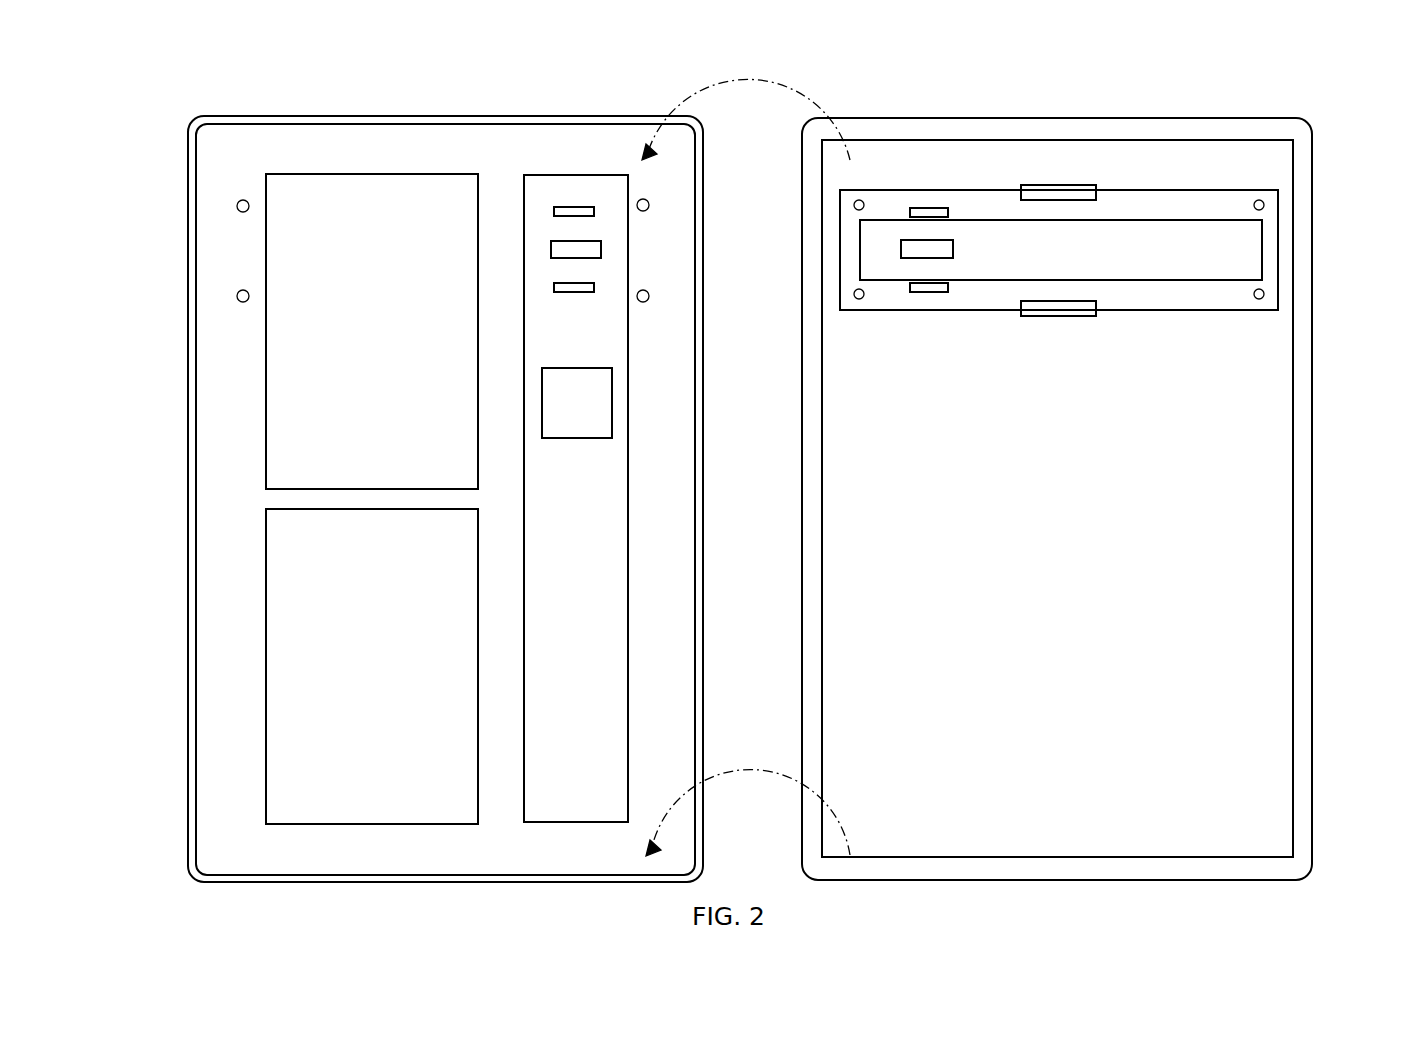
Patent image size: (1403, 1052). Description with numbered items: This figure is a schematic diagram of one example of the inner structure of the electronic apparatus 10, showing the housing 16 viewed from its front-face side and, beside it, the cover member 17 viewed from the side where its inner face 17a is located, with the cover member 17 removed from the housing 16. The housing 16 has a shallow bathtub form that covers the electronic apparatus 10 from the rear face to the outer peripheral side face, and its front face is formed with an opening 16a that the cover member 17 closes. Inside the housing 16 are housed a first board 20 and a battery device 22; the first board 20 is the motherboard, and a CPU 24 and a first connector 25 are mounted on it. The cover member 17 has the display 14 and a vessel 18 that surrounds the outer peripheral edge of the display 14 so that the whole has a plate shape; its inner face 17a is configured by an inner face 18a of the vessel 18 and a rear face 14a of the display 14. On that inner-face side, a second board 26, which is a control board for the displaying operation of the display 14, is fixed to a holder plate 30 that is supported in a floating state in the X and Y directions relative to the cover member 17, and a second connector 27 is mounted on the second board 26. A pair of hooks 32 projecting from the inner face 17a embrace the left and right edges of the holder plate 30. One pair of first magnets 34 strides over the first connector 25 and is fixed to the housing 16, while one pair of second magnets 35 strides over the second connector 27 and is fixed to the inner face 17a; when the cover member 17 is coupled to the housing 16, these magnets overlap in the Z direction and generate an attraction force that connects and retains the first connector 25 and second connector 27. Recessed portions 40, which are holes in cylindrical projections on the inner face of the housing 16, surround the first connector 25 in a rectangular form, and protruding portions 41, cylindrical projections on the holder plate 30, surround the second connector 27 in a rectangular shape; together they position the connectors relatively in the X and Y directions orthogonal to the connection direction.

The electronic apparatus 10 is at (144, 98).
The display 14 is at (1218, 150).
The rear face of the display 14a is at (990, 158).
The housing 16 is at (318, 112).
The opening 16a is at (412, 128).
The cover member 17 is at (1304, 68).
The inner face of the cover member 17a is at (1082, 68).
The vessel 18 is at (1280, 125).
The inner face of the vessel 18a is at (1055, 125).
The first board 20 is at (540, 175).
The battery device 22 is at (282, 463).
The CPU 24 is at (600, 408).
The first connector 25 is at (596, 246).
The second board 26 is at (1142, 264).
The second connector 27 is at (905, 240).
The holder plate 30 is at (1210, 310).
The hooks 32 is at (1090, 185).
The first magnets 34 is at (580, 210).
The second magnets 35 is at (925, 208).
The recessed portions 40 is at (122, 217).
The protruding portions 41 is at (865, 210).